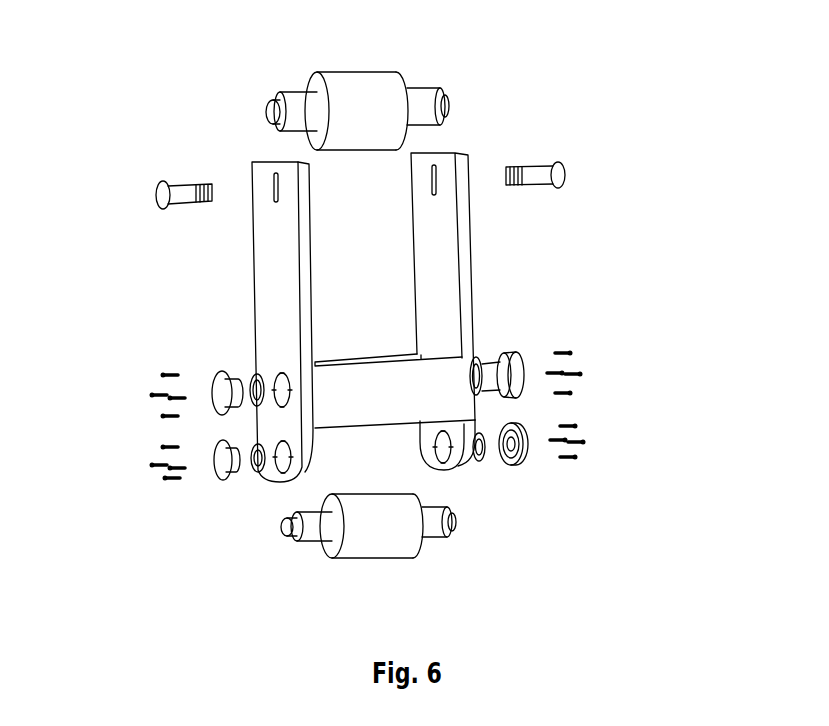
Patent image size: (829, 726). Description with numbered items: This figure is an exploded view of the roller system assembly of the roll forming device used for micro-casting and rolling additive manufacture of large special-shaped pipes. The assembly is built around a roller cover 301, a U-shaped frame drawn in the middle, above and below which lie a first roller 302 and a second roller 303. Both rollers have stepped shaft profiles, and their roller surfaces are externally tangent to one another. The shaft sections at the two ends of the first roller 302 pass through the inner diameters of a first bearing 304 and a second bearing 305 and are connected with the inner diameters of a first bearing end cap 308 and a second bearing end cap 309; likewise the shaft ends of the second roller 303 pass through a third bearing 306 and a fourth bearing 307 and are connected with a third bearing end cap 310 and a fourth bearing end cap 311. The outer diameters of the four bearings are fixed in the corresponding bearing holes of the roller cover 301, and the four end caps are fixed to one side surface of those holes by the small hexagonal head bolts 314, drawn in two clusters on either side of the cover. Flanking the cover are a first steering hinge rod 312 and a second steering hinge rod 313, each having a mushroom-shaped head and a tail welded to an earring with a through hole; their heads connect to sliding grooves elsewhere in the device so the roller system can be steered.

The roller cover 301 is at (274, 313).
The first roller 302 is at (310, 120).
The second roller 303 is at (380, 535).
The first bearing 304 is at (255, 381).
The second bearing 305 is at (487, 362).
The third bearing 306 is at (256, 470).
The fourth bearing 307 is at (490, 456).
The first bearing end cap 308 is at (212, 382).
The second bearing end cap 309 is at (503, 368).
The third bearing end cap 310 is at (219, 470).
The fourth bearing end cap 311 is at (520, 441).
The first steering hinge rod 312 is at (165, 188).
The second steering hinge rod 313 is at (562, 163).
The hexagonal head bolts 314 is at (160, 465).